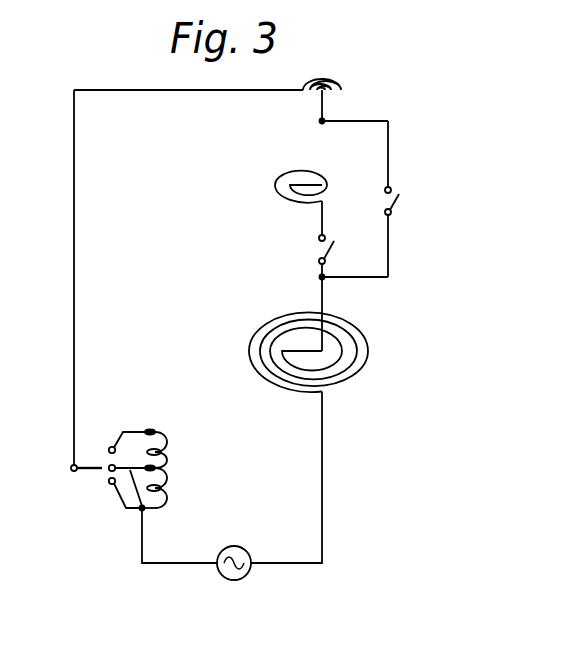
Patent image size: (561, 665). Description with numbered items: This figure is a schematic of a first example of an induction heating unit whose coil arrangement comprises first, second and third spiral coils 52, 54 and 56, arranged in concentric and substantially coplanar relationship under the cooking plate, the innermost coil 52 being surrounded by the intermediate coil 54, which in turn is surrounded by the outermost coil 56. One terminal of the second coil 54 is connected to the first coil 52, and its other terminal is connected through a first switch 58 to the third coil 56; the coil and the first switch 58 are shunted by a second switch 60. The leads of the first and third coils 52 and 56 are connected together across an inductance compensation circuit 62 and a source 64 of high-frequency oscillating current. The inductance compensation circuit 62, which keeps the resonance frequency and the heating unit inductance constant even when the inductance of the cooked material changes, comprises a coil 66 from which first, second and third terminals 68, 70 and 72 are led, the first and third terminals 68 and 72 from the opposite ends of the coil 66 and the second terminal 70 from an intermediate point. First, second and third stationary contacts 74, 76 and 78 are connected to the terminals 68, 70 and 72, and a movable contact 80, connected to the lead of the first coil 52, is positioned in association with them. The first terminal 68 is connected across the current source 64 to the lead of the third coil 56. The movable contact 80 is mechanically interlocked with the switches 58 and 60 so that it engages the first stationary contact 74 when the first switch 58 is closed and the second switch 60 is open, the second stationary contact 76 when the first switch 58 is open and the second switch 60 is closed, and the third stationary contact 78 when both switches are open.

The first spiral coil 52 is at (308, 93).
The second spiral coil 54 is at (288, 203).
The third spiral coil 56 is at (281, 387).
The first switch 58 is at (318, 250).
The second switch 60 is at (397, 203).
The inductance compensation circuit 62 is at (123, 467).
The source of high-frequency oscillating current 64 is at (248, 572).
The coil 66 is at (167, 459).
The first terminal 68 is at (131, 513).
The second terminal 70 is at (149, 511).
The third terminal 72 is at (137, 430).
The first stationary contact 74 is at (111, 485).
The second stationary contact 76 is at (108, 473).
The third stationary contact 78 is at (109, 447).
The movable contact 80 is at (86, 462).